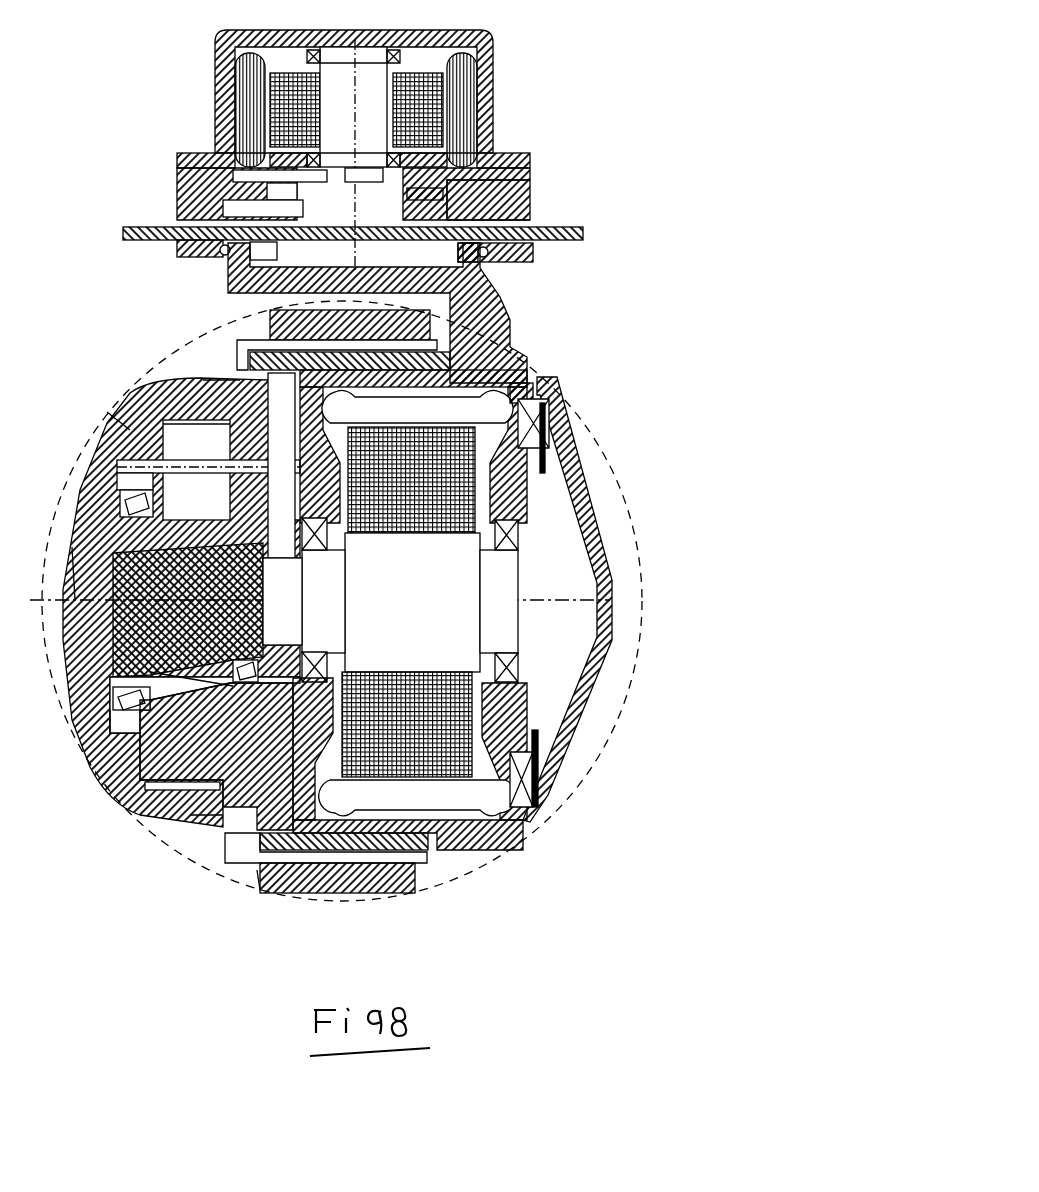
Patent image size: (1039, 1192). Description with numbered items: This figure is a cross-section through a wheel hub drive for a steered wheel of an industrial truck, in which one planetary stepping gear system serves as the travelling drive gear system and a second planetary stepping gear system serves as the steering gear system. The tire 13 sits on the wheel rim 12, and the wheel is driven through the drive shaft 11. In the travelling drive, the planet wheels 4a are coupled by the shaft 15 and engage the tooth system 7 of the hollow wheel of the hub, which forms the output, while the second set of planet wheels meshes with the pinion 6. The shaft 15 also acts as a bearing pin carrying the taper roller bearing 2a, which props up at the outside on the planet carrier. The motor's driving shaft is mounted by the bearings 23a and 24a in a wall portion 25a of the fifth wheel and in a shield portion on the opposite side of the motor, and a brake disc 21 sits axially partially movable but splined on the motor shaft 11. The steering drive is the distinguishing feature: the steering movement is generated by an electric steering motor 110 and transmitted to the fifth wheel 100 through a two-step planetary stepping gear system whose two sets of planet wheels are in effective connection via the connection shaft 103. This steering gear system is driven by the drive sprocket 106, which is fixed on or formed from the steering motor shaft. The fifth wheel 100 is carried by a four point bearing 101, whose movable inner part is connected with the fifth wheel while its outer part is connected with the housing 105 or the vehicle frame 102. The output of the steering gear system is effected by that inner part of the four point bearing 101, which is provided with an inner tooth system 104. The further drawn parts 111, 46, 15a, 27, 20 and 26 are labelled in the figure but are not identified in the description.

The shaft hub of first motor 111 is at (370, 70).
The steering motor 110 is at (428, 94).
The drive sprocket 106 is at (376, 178).
The connection shaft 103 is at (437, 195).
The housing 105 is at (493, 197).
The vehicle frame 102 is at (548, 236).
The four point bearing 101 is at (527, 257).
The inner tooth system 104 is at (458, 248).
The fifth wheel 100 is at (493, 310).
The housing cover 46 is at (203, 380).
The planet wheels 4a is at (189, 440).
The housing wall 15a is at (107, 412).
The shaft 15 is at (83, 500).
The pinion 6 is at (72, 547).
The upper bearing 27 is at (522, 426).
The drive shaft 11 is at (504, 631).
The bearing 24a is at (500, 667).
The stator coil 20 is at (462, 762).
The brake disc 21 is at (545, 779).
The tire 13 is at (407, 887).
The taper roller bearing 2a is at (73, 770).
The support block 26 is at (167, 779).
The tooth system 7 is at (159, 840).
The bearing 23a is at (190, 815).
The wheel rim 12 is at (225, 850).
The wall portion 25a is at (257, 870).